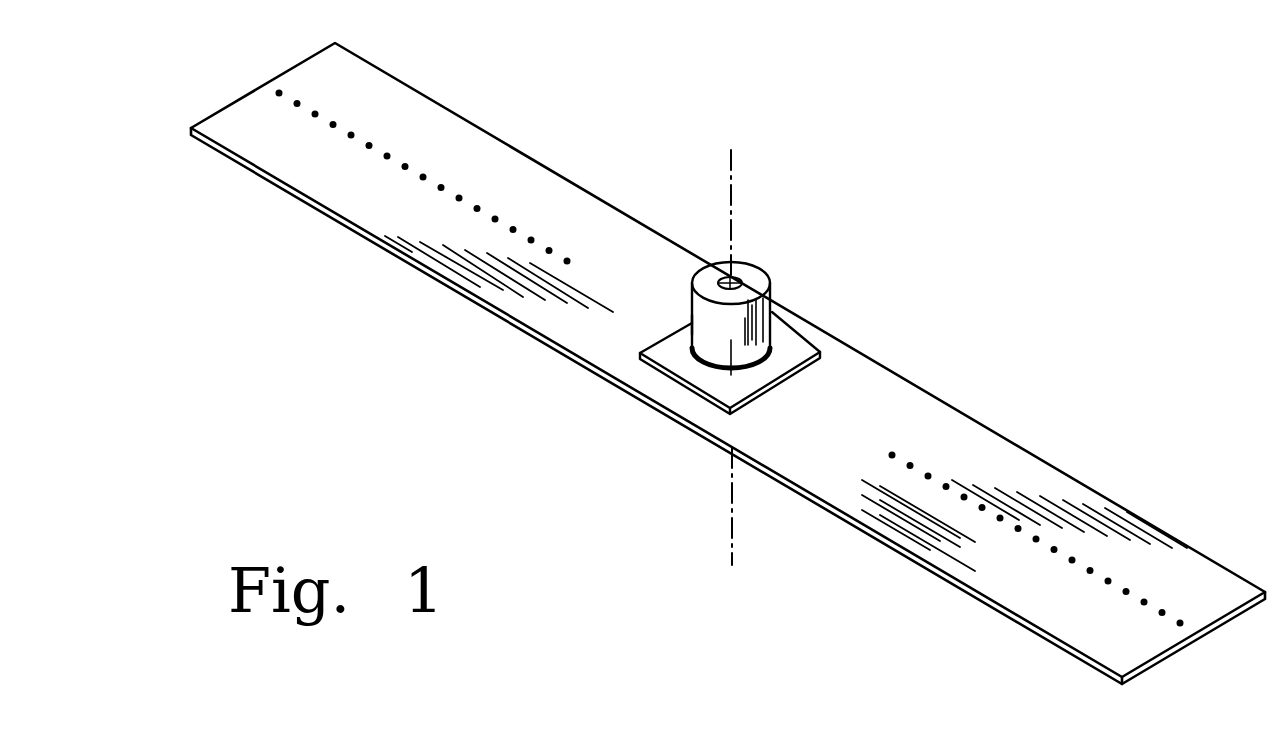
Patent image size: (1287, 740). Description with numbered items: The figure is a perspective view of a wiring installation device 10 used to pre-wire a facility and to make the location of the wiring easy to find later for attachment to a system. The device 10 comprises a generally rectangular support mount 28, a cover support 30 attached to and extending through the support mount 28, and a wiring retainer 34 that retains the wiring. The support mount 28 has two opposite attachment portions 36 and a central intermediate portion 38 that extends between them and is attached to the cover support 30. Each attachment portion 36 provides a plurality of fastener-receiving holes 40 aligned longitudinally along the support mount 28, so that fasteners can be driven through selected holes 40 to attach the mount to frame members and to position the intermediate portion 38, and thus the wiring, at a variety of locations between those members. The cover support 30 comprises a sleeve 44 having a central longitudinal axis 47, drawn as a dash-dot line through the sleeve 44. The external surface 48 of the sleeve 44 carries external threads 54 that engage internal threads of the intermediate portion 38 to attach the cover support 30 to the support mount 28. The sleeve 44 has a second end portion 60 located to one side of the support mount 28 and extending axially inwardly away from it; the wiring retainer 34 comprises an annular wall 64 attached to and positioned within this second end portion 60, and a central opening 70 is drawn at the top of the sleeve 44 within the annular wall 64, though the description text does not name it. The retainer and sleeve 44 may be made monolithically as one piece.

The wiring installation device 10 is at (1160, 207).
The support mount 28 is at (600, 211).
The cover support 30 is at (772, 311).
The wiring retainer 34 is at (744, 258).
The attachment portions 36 is at (415, 127).
The intermediate portion 38 is at (785, 352).
The fastener-receiving holes 40 is at (425, 177).
The sleeve 44 is at (688, 324).
The central longitudinal axis 47 is at (732, 165).
The external surface 48 is at (774, 313).
The external threads 54 is at (732, 373).
The second end portion 60 is at (692, 307).
The annular wall 64 is at (760, 282).
The aperture 70 is at (727, 274).